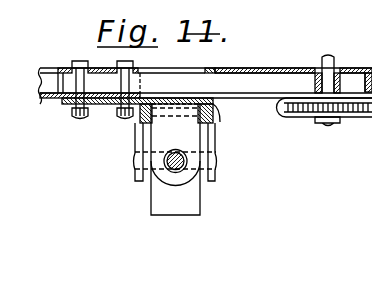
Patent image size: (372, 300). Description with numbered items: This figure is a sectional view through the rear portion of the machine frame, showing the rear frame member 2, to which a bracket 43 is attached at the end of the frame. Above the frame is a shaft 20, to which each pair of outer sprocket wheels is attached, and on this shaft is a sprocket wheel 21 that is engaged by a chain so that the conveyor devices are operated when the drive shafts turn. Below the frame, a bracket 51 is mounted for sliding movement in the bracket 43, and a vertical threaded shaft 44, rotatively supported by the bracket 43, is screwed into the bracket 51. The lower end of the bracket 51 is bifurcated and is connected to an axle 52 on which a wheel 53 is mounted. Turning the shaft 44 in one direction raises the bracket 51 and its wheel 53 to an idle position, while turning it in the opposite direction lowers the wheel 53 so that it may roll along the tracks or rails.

The rear frame member 2 is at (50, 100).
The shaft 20 is at (334, 59).
The sprocket wheel 21 is at (306, 110).
The bracket 43 is at (211, 124).
The vertical threaded shaft 44 is at (171, 161).
The bracket 51 is at (173, 139).
The axle 52 is at (136, 154).
The wheel 53 is at (167, 206).